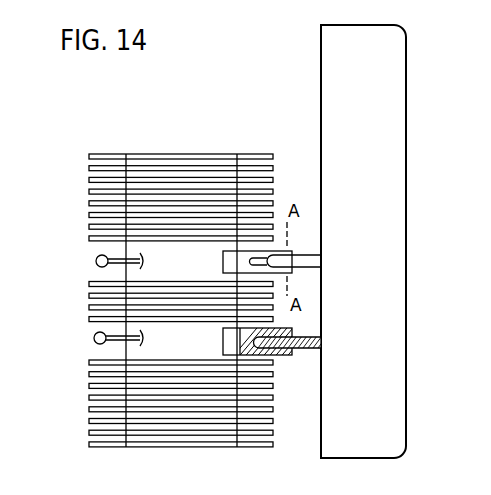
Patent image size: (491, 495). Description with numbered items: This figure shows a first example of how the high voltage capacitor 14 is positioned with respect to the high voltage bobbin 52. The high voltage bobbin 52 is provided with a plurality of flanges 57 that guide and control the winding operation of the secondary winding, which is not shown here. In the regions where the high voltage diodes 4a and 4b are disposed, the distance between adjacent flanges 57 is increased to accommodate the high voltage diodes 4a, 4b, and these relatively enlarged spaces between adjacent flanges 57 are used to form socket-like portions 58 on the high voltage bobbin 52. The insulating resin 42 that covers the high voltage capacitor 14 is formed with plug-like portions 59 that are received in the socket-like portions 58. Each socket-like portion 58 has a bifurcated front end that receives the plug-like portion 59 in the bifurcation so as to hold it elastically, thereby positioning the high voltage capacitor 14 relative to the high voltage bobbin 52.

The high voltage capacitor 14 is at (414, 53).
The insulating resin 42 is at (405, 153).
The high voltage bobbin 52 is at (234, 150).
The flanges 57 is at (88, 179).
The socket-like portions 58 is at (294, 249).
The plug-like portions 59 is at (312, 266).
The high voltage diode 4a is at (96, 256).
The high voltage diode 4b is at (94, 332).